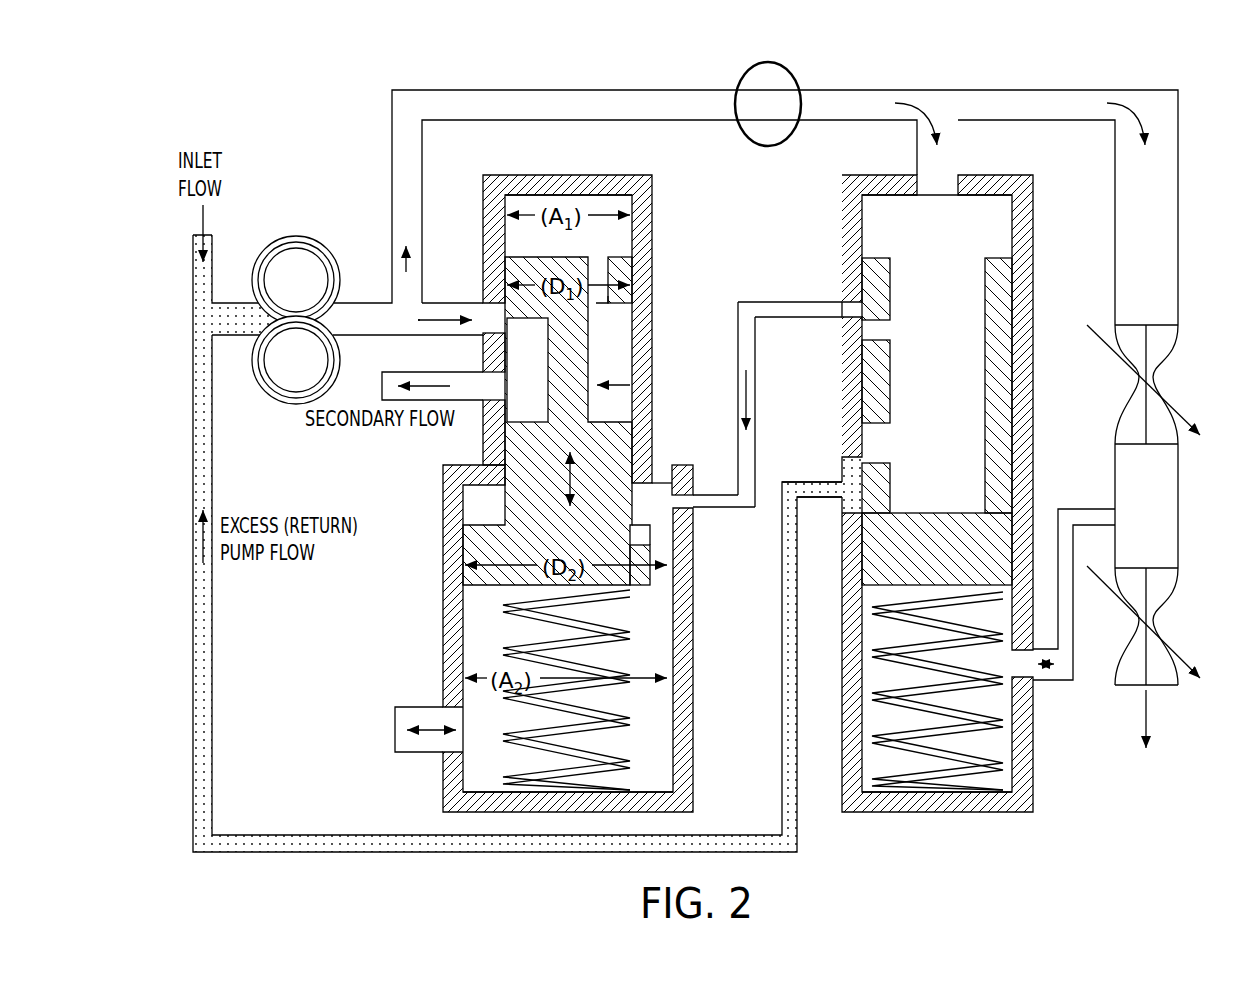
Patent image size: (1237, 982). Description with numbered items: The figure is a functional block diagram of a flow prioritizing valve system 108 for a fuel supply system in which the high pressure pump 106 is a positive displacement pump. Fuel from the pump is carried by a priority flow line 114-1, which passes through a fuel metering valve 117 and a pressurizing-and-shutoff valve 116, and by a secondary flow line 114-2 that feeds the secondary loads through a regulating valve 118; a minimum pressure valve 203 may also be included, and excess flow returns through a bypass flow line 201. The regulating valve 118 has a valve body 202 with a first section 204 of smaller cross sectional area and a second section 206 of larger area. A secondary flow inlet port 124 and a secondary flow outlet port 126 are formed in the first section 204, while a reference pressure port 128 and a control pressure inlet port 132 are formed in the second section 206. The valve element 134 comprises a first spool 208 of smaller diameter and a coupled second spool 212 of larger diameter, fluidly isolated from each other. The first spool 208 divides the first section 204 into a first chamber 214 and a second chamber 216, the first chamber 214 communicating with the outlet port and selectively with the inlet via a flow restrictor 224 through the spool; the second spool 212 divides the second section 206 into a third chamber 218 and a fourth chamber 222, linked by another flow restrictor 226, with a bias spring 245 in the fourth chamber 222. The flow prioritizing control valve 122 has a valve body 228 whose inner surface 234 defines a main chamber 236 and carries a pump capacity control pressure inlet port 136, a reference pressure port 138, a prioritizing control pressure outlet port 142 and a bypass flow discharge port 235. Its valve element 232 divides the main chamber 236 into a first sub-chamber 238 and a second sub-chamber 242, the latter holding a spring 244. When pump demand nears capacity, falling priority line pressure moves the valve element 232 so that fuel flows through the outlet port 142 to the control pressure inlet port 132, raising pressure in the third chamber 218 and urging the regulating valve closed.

The high pressure pump 106 is at (300, 237).
The flow prioritizing valve system 108 is at (298, 116).
The priority flow line 114-1 is at (933, 90).
The secondary flow line 114-2 is at (455, 370).
The pressurizing-and-shutoff valve 116 is at (1160, 618).
The fuel metering valve 117 is at (1160, 378).
The regulating valve 118 is at (660, 236).
The flow prioritizing control valve 122 is at (836, 208).
The secondary flow inlet port 124 is at (483, 300).
The secondary flow outlet port 126 is at (480, 402).
The reference pressure port 128 is at (412, 706).
The control pressure inlet port 132 is at (705, 500).
The valve element 134 is at (636, 400).
The pump capacity control pressure inlet port 136 is at (955, 178).
The reference pressure port 138 is at (1040, 683).
The prioritizing control pressure outlet port 142 is at (840, 303).
The bypass flow line 201 is at (800, 843).
The valve body 202 is at (652, 190).
The minimum pressure valve 203 is at (745, 70).
The first section 204 is at (636, 284).
The second section 206 is at (694, 672).
The first spool 208 is at (626, 292).
The second spool 212 is at (668, 580).
The first chamber 214 is at (507, 246).
The second chamber 216 is at (537, 398).
The third chamber 218 is at (658, 482).
The fourth chamber 222 is at (660, 772).
The flow restrictor 224 is at (620, 312).
The flow restrictor 226 is at (655, 545).
The valve body 228 is at (1030, 208).
The valve element 232 is at (1000, 440).
The inner surface 234 is at (1010, 235).
The bypass flow discharge port 235 is at (835, 480).
The main chamber 236 is at (958, 476).
The first sub-chamber 238 is at (965, 302).
The second sub-chamber 242 is at (1000, 743).
The spring 244 is at (950, 797).
The bias spring 245 is at (640, 720).